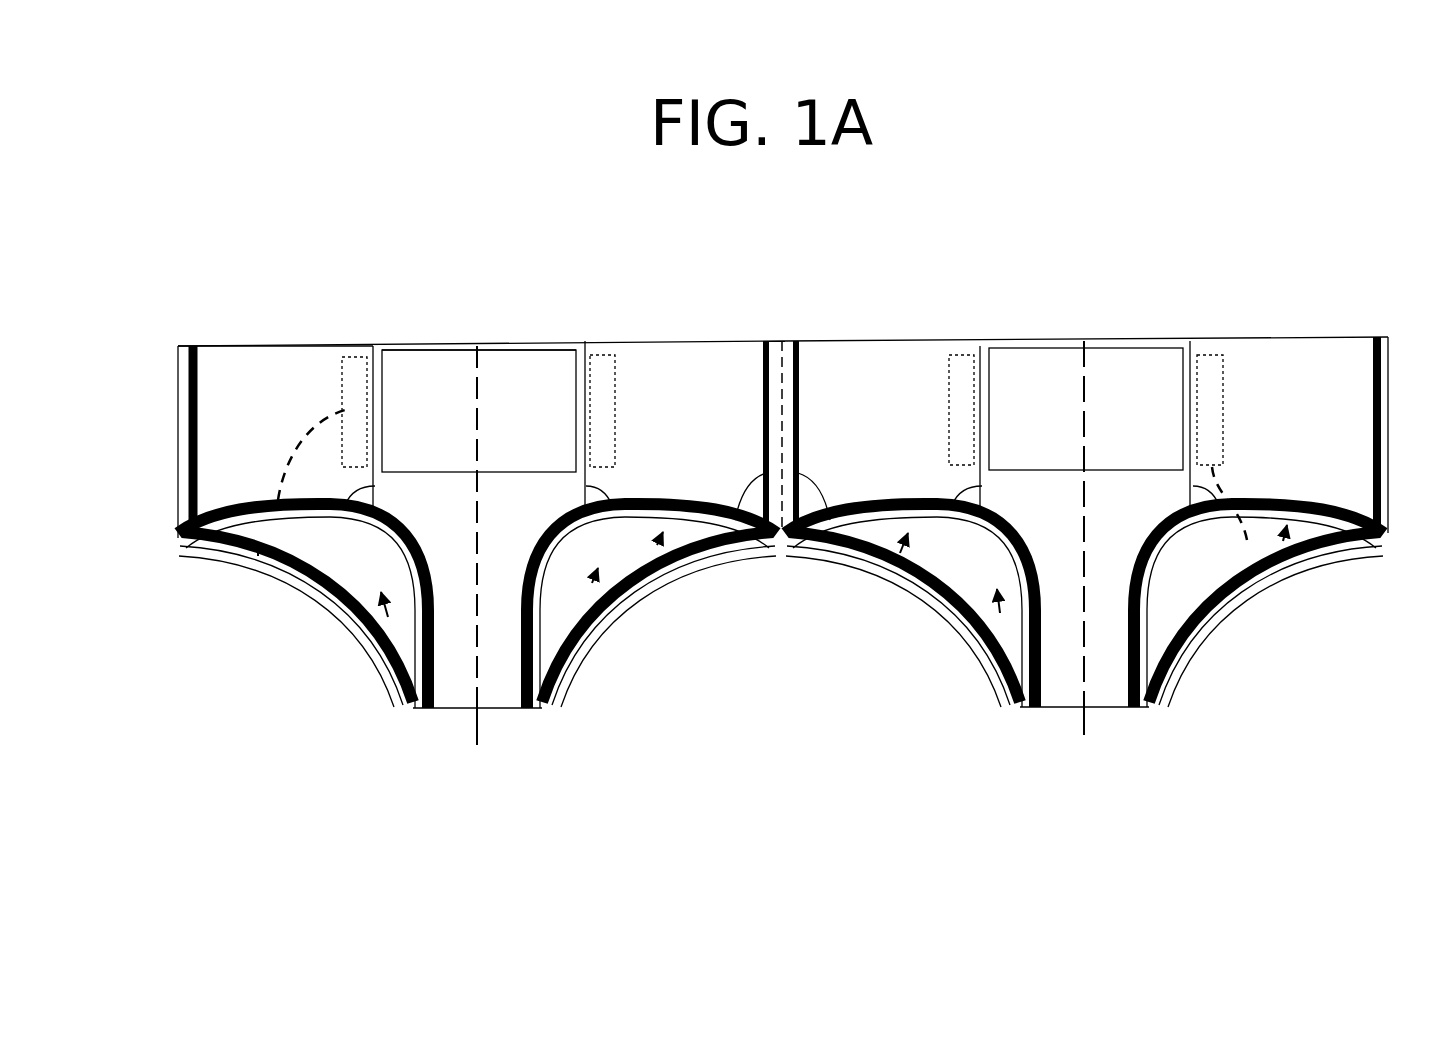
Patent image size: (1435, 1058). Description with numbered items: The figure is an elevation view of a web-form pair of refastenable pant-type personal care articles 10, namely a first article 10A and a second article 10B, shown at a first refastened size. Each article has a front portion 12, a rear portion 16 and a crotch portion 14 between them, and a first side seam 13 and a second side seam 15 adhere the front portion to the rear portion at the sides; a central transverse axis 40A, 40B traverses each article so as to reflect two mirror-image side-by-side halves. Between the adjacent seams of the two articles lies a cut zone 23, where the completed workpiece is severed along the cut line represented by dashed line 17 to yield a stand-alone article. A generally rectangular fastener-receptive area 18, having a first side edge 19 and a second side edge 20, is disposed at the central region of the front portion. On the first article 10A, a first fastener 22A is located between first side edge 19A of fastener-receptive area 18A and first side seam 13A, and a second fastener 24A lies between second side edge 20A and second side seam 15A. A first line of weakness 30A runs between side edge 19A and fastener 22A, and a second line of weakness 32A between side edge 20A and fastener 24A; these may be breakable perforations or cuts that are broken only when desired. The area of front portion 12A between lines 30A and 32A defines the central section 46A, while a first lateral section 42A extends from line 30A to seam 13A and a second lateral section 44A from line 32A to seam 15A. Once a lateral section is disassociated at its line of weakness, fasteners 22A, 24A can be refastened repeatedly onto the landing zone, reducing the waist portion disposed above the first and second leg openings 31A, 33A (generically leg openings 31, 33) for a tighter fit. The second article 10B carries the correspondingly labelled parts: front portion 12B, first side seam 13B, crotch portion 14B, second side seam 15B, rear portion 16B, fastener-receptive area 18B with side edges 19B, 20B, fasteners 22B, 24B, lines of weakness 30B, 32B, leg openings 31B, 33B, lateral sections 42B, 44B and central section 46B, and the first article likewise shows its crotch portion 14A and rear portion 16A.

The personal care articles 10 is at (1133, 243).
The first refastenable pant-type personal care article 10A is at (300, 317).
The second refastenable pant-type personal care article 10B is at (1303, 317).
The front portion 12 is at (295, 358).
The front portion 12A is at (530, 350).
The side panel of second garment 12B is at (1057, 340).
The first side seam 13 is at (190, 472).
The first side seam 13A is at (190, 450).
The side edge region of second garment 13B is at (845, 540).
The crotch portion 14 is at (505, 688).
The crotch edge of first garment 14A is at (452, 709).
The crotch edge of second garment 14B is at (1115, 708).
The second side seam 15 is at (1385, 432).
The second side seam 15A is at (742, 537).
The side edge of second garment 15B is at (1386, 382).
The rear portion 16 is at (578, 587).
The leg opening of first garment 16A is at (680, 558).
The leg opening of second garment 16B is at (1310, 550).
The cut line 17 is at (746, 348).
The fastener-receptive area 18 is at (497, 378).
The fastener-receptive area 18A is at (538, 347).
The absorbent core of second garment 18B is at (1119, 345).
The first side edge 19 is at (377, 392).
The first side edge 19A is at (372, 382).
The fastening member of second garment 19B is at (983, 355).
The second side edge 20 is at (582, 390).
The second side edge 20A is at (579, 392).
The fastening member of second garment 20B is at (1175, 350).
The first fastener 22A is at (258, 548).
The belt line of second garment 22B is at (945, 383).
The cut zone 23 is at (786, 397).
The second fastener 24A is at (620, 393).
The belt line of second garment 24B is at (1247, 540).
The first line of weakness 30A is at (345, 518).
The waist elastic of second garment 30B is at (947, 597).
The leg opening 31 is at (997, 653).
The first leg opening 31A is at (388, 645).
The leg elastic of second garment 31B is at (906, 570).
The second line of weakness 32A is at (635, 532).
The elastic member of second garment 32B is at (1157, 540).
The leg opening 33 is at (657, 563).
The second leg opening 33A is at (603, 593).
The leg elastic of second garment 33B is at (1293, 553).
The longitudinal centerline of first garment 40A is at (475, 742).
The longitudinal centerline of second garment 40B is at (1080, 683).
The first lateral section 42A is at (220, 345).
The side edge of second garment 42B is at (830, 340).
The second lateral section 44A is at (728, 343).
The waist edge of second garment 44B is at (1331, 346).
The central section 46A is at (418, 346).
The central panel of second garment 46B is at (1066, 343).